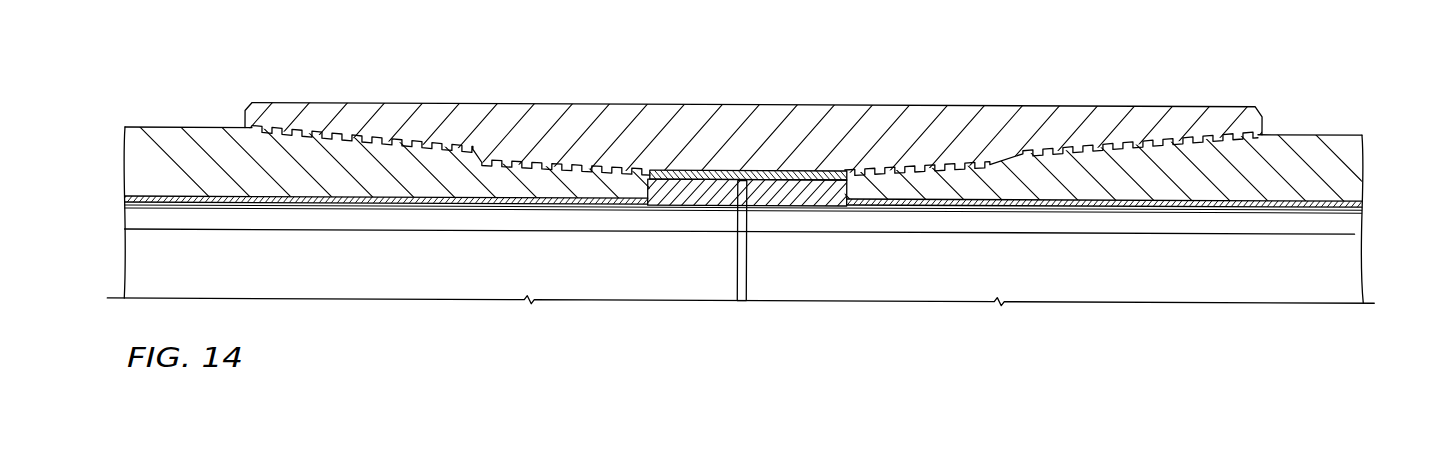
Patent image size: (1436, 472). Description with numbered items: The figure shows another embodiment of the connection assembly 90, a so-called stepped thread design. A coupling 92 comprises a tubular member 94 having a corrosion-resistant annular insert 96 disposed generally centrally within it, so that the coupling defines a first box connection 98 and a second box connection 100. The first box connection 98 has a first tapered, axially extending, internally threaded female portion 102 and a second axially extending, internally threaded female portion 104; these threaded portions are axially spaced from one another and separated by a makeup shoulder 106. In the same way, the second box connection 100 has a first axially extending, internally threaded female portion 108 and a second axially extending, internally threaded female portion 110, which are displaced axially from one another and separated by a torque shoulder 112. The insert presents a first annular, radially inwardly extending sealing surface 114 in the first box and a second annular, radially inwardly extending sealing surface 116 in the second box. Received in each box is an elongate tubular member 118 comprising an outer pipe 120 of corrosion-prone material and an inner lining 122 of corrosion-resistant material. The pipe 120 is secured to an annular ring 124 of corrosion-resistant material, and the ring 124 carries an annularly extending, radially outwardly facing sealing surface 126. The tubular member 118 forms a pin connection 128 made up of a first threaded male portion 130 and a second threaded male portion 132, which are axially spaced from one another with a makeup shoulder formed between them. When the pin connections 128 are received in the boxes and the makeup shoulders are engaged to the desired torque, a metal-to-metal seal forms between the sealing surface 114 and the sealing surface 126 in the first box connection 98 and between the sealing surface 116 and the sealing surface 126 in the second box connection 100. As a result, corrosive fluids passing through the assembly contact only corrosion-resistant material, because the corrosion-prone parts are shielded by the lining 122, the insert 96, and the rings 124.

The connection assembly 90 is at (916, 82).
The coupling 92 is at (647, 93).
The tubular member 94 is at (522, 110).
The annular insert 96 is at (818, 163).
The first box connection 98 is at (252, 126).
The second box connection 100 is at (1268, 134).
The first tapered internally threaded female portion 102 is at (318, 138).
The second internally threaded female portion 104 is at (605, 166).
The makeup shoulder 106 is at (480, 148).
The first internally threaded female portion 108 is at (1148, 149).
The second internally threaded female portion 110 is at (968, 165).
The torque shoulder 112 is at (1020, 152).
The first annular radially inwardly extending surface 114 is at (713, 173).
The second annular radially inwardly extending sealing surface 116 is at (787, 177).
The elongate tubular member 118 is at (143, 122).
The outer pipe 120 is at (135, 160).
The inner lining 122 is at (157, 206).
The annular ring 124 is at (672, 206).
The sealing surface 126 is at (738, 206).
The pin connection 128 is at (316, 213).
The first threaded male portion 130 is at (375, 136).
The second threaded male portion 132 is at (487, 158).